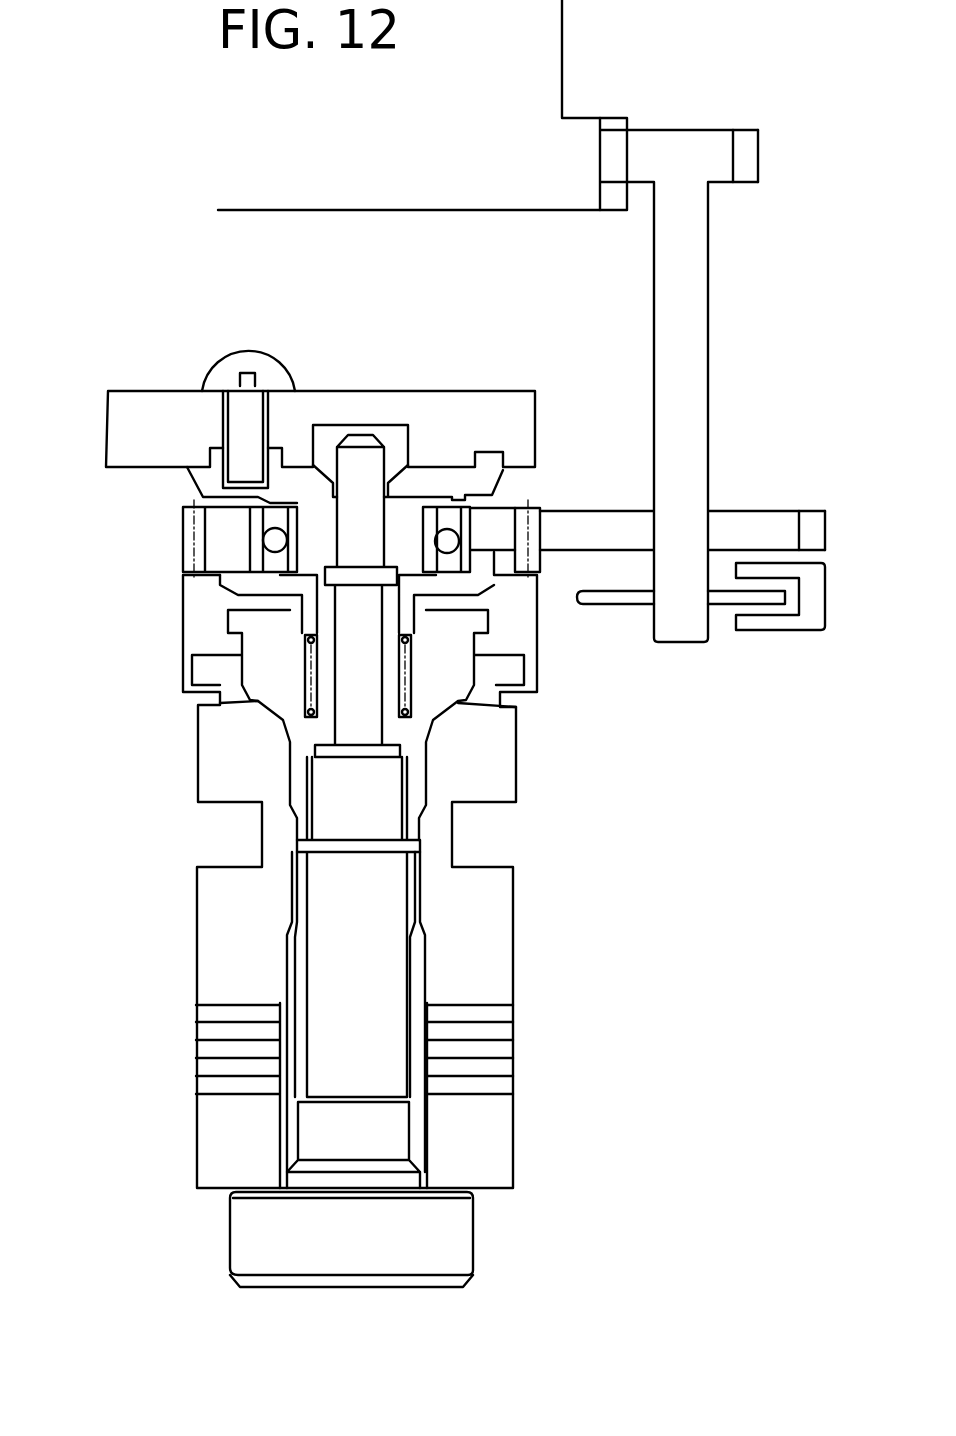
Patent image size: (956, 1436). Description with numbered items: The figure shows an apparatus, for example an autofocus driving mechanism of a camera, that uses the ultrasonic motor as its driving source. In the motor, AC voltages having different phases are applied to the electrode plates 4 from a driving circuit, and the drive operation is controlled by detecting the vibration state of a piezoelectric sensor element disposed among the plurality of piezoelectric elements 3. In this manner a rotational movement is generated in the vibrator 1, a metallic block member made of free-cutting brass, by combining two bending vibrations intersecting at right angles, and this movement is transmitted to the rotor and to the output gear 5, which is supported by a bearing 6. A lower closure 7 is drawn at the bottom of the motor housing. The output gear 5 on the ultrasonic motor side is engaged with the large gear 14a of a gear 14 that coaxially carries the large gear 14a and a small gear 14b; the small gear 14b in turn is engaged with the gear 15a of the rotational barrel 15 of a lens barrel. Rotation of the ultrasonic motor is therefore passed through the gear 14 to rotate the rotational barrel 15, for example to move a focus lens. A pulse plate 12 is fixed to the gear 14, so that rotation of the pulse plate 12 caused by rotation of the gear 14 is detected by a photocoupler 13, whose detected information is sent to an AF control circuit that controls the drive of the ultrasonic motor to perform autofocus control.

The vibrator 1 is at (505, 1128).
The piezoelectric elements 3 is at (505, 1015).
The electrode plates 4 is at (196, 1093).
The output gear 5 is at (533, 508).
The bearing 6 is at (243, 522).
The bottom cap 7 is at (458, 1220).
The pulse plate 12 is at (612, 606).
The photocoupler 13 is at (775, 625).
The gear 14 is at (690, 323).
The large gear 14a is at (812, 526).
The small gear 14b is at (752, 153).
The rotational barrel 15 is at (548, 66).
The gear of the rotational barrel 15a is at (610, 207).